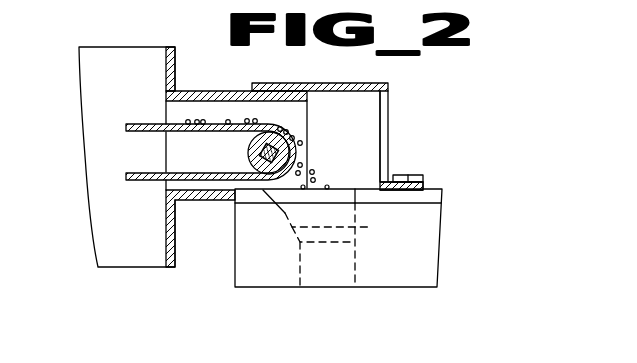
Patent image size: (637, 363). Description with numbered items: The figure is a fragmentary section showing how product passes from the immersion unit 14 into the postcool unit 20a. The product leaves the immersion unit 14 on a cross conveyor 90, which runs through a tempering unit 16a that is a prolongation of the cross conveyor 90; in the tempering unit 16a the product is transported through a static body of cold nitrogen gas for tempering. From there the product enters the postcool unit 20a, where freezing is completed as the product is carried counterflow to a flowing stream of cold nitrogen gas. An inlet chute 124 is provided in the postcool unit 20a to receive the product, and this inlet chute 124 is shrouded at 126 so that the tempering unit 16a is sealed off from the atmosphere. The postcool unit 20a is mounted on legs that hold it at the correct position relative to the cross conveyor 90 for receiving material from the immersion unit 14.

The immersion unit 14 is at (176, 236).
The tempering unit 16a is at (204, 91).
The shroud 126 is at (386, 131).
The cross conveyor 90 is at (140, 123).
The postcool unit 20a is at (442, 215).
The inlet chute 124 is at (366, 227).